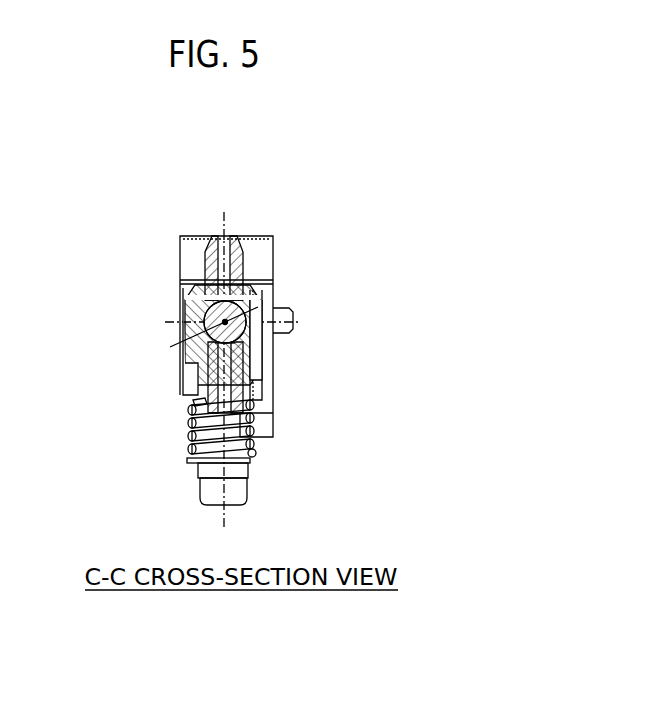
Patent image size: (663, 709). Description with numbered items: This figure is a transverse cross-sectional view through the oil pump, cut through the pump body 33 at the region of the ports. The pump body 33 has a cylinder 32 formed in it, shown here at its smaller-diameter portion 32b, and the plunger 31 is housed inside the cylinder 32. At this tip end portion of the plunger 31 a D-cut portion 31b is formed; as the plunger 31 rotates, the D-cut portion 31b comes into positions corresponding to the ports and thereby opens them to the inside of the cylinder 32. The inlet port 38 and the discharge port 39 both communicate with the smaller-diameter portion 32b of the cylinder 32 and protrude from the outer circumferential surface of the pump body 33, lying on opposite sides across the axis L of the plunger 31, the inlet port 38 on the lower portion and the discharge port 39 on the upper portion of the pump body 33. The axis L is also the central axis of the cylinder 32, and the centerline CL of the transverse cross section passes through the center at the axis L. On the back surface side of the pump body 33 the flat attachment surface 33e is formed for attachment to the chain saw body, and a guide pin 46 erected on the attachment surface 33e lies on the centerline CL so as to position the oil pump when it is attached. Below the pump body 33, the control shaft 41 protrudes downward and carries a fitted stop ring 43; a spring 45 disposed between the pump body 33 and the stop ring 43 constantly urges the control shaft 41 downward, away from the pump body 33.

The plunger 31 is at (183, 290).
The D-cut portion 31b is at (255, 349).
The cylinder 32 is at (207, 345).
The smaller-diameter portion 32b is at (167, 389).
The pump body 33 is at (258, 237).
The attachment surface 33e is at (275, 281).
The inlet port 38 is at (197, 425).
The discharge port 39 is at (229, 238).
The control shaft 41 is at (247, 495).
The stop ring 43 is at (190, 463).
The spring 45 is at (256, 452).
The guide pin 46 is at (296, 316).
The centerline CL is at (172, 322).
The axis L is at (172, 347).